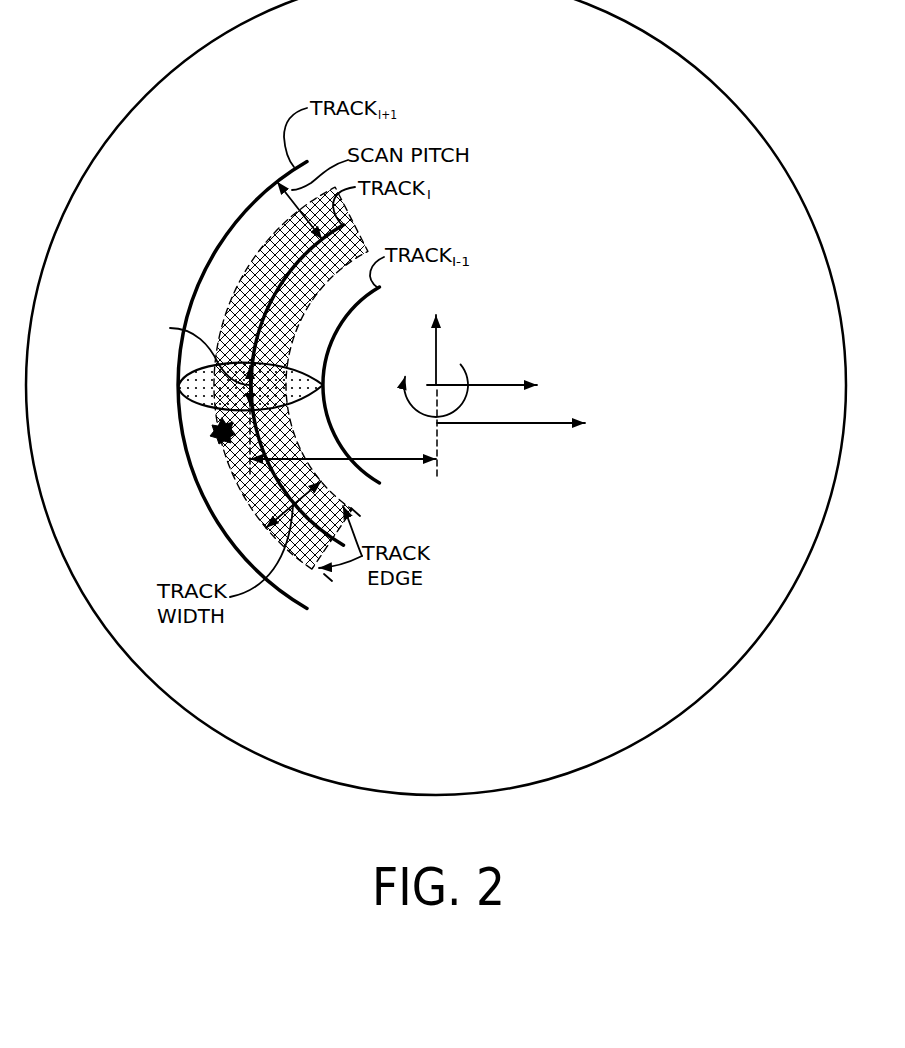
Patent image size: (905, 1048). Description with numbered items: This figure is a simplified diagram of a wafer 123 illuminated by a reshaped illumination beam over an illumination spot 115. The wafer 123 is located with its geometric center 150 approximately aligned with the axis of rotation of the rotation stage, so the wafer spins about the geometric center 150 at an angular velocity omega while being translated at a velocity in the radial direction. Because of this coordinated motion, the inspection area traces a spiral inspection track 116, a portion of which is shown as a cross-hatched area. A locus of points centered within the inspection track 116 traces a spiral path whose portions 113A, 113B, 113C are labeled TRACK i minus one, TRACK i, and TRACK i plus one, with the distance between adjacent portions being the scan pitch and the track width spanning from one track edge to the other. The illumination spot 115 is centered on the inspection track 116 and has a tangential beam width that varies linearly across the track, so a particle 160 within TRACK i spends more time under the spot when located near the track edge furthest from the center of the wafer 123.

The wafer 123 is at (753, 124).
The portion of spiral path 113A is at (325, 362).
The portion of spiral path 113B is at (282, 283).
The portion of spiral path 113C is at (256, 200).
The illumination spot 115 is at (179, 387).
The inspection track 116 is at (349, 243).
The geometric center 150 is at (437, 380).
The particle 160 is at (212, 436).